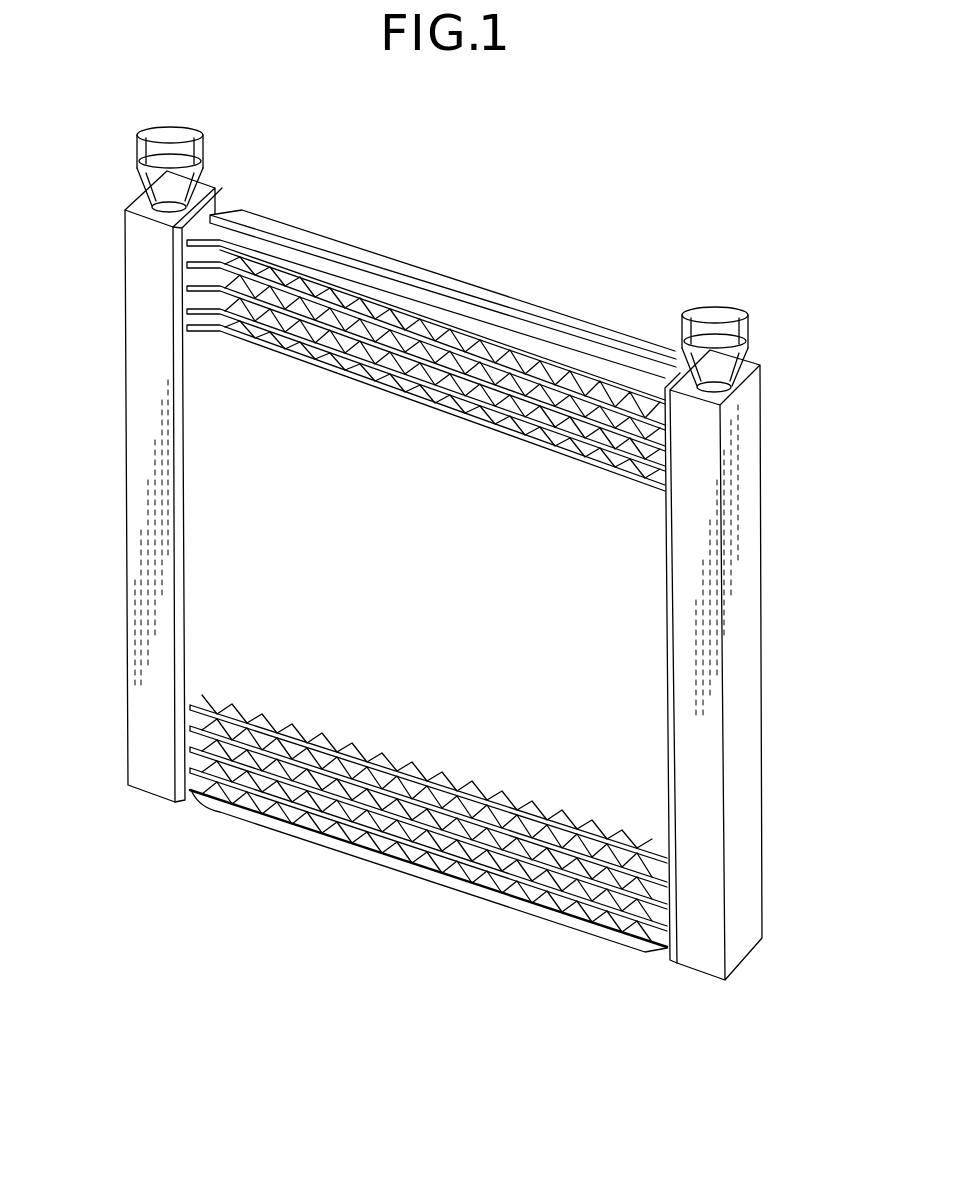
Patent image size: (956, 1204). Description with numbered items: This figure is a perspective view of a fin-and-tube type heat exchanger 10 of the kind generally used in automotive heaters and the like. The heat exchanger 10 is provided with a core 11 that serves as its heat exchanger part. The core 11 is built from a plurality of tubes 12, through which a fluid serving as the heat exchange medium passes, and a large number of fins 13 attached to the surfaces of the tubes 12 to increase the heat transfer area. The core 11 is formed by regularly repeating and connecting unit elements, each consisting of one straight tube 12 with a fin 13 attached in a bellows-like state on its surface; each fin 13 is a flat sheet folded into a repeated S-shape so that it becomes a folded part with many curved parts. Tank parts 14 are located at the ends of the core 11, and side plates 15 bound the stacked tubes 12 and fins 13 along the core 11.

The fin-and-tube type heat exchanger 10 is at (467, 228).
The core 11 is at (350, 585).
The tube 12 is at (217, 335).
The fin 13 is at (665, 478).
The tank part 14 is at (150, 623).
The side plate 15 is at (592, 347).